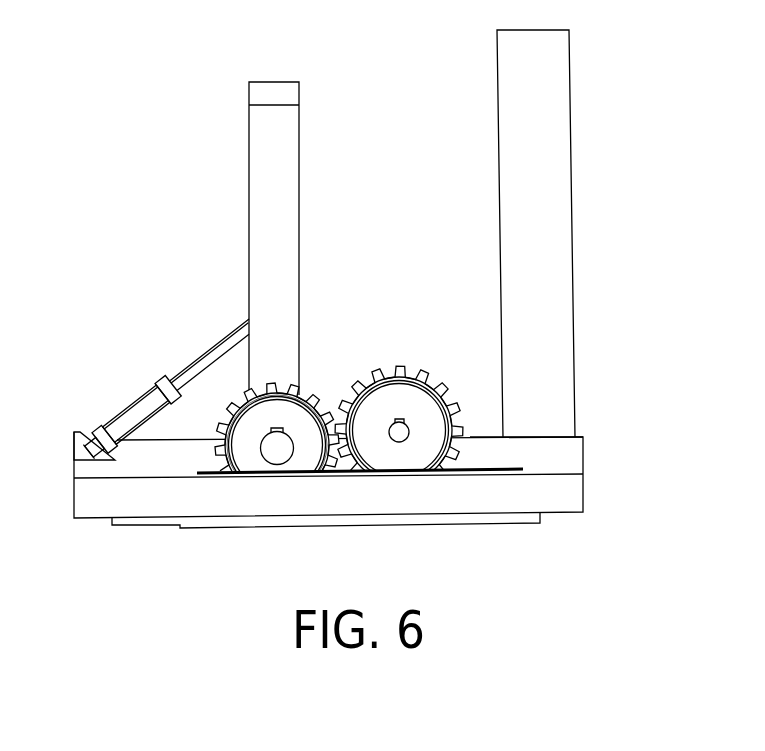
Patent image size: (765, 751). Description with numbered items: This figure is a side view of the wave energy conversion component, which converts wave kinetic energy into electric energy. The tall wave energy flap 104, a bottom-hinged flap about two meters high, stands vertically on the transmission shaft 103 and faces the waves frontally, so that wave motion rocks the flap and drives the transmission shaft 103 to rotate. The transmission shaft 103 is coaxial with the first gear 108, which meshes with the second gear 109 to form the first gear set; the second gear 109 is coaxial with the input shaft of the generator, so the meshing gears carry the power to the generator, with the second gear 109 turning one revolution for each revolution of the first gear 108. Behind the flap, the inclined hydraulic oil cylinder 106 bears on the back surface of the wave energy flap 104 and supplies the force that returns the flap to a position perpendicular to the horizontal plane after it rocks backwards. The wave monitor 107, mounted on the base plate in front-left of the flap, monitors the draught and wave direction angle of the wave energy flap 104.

The transmission shaft 103 is at (283, 453).
The wave energy flap 104 is at (280, 193).
The hydraulic oil cylinder 106 is at (142, 410).
The wave monitor 107 is at (555, 177).
The first gear 108 is at (242, 423).
The second gear 109 is at (420, 412).